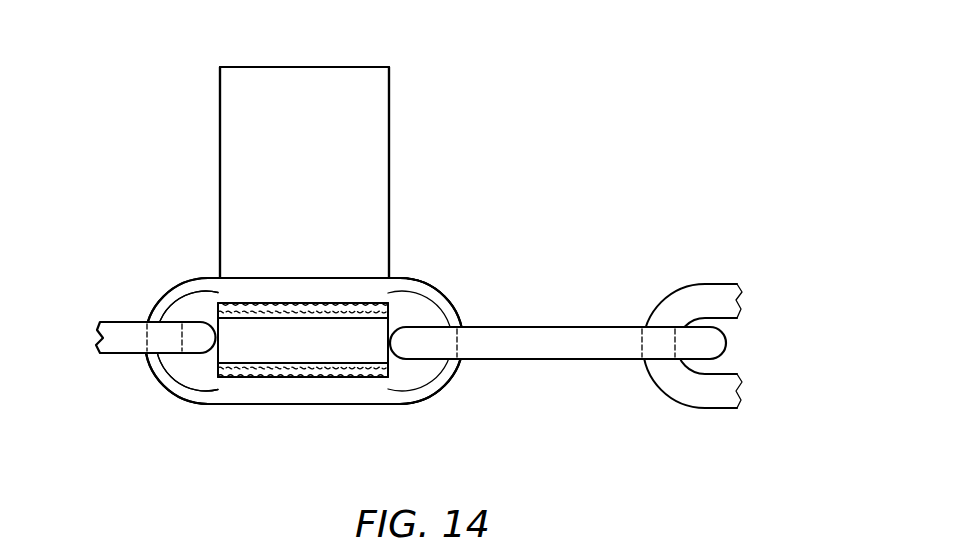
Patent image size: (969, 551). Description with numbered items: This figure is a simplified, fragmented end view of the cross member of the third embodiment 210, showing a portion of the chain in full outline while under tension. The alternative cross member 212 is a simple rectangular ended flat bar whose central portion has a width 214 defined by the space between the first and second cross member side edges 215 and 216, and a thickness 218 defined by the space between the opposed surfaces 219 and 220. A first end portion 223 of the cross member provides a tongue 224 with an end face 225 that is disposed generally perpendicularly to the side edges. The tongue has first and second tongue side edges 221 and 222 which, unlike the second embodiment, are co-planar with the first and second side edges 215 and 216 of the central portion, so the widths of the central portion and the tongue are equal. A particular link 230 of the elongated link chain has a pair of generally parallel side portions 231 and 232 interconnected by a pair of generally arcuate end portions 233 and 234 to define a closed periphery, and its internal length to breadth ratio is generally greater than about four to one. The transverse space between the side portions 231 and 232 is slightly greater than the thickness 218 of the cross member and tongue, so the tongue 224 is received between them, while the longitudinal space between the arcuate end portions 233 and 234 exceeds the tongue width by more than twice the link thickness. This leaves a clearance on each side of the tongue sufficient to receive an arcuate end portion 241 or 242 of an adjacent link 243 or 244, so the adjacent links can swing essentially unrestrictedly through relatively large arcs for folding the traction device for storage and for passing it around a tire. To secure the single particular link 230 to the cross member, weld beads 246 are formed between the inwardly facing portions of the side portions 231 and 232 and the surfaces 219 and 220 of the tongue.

The third embodiment 210 is at (190, 191).
The alternative cross member 212 is at (190, 191).
The width 214 is at (388, 42).
The first cross member side edge 215 is at (220, 115).
The second cross member side edge 216 is at (392, 113).
The thickness 218 is at (349, 300).
The opposed surface 219 is at (385, 303).
The opposed surface 220 is at (368, 372).
The first tongue side edge 221 is at (203, 318).
The second tongue side edge 222 is at (407, 317).
The first end portion 223 is at (236, 344).
The tongue 224 is at (236, 344).
The end face 225 is at (323, 356).
The particular link 230 is at (415, 255).
The side portion 231 is at (283, 292).
The side portion 232 is at (293, 392).
The arcuate end portion 233 is at (167, 370).
The arcuate end portion 234 is at (437, 370).
The arcuate end portion 241 is at (197, 307).
The arcuate end portion 242 is at (413, 360).
The adjacent link 243 is at (123, 338).
The adjacent link 244 is at (593, 343).
The weld beads 246 is at (265, 303).